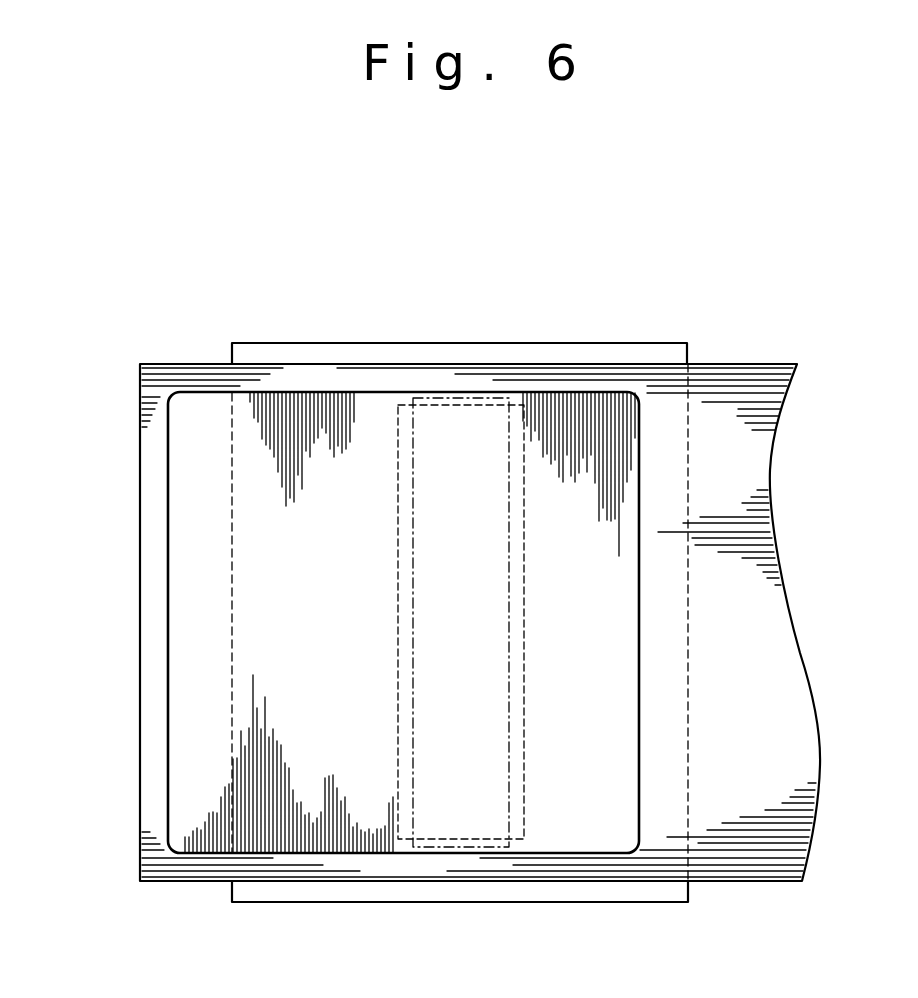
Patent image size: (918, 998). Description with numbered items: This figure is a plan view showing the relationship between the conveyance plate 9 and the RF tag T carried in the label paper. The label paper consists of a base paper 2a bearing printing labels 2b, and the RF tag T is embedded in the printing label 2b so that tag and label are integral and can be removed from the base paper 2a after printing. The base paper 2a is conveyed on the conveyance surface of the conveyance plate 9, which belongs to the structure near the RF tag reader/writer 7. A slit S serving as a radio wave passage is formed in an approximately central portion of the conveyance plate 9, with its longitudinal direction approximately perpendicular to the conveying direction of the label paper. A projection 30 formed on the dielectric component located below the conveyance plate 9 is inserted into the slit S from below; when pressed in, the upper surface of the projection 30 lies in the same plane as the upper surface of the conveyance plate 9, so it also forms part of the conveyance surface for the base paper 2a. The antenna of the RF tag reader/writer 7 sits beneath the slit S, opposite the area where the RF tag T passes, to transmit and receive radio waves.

The base paper 2a is at (140, 618).
The printing label 2b is at (193, 398).
The RF tag reader/writer 7 is at (768, 286).
The conveyance plate 9 is at (633, 343).
The projection 30 is at (398, 422).
The slit S is at (398, 819).
The RF tag T is at (473, 846).